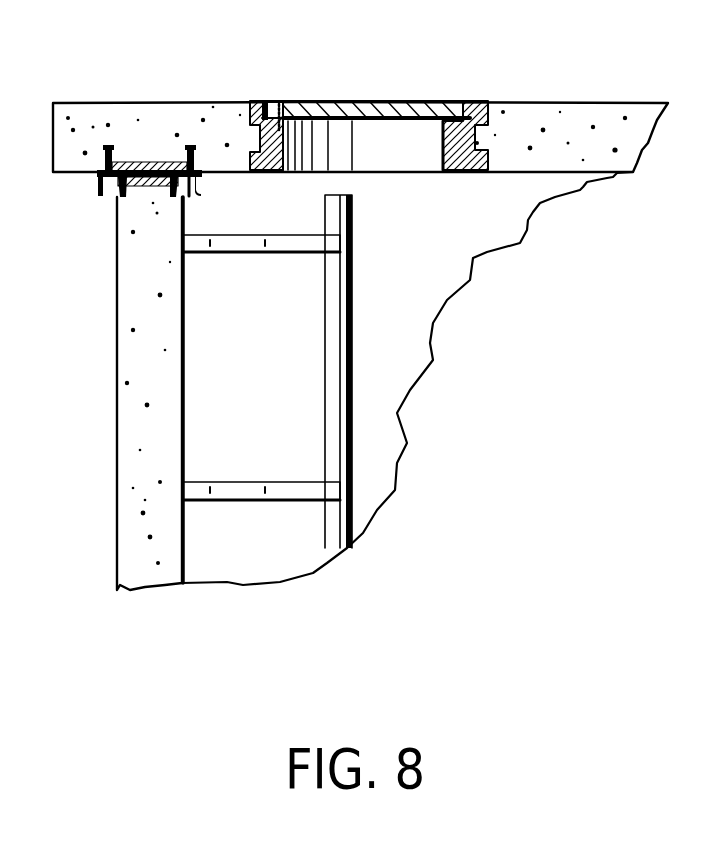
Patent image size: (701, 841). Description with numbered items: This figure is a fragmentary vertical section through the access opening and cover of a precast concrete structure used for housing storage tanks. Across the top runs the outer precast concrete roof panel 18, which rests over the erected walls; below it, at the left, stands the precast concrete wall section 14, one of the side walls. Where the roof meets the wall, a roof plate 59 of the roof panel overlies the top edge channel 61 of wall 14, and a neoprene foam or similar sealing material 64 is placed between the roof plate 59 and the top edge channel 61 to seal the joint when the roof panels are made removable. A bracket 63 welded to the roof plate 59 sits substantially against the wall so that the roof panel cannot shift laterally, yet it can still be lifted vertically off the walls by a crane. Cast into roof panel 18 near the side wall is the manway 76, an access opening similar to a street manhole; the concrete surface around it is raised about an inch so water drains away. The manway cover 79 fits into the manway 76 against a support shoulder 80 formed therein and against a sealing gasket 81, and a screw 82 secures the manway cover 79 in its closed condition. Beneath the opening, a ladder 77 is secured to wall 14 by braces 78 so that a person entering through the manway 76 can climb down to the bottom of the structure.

The precast concrete wall section 14 is at (125, 343).
The precast concrete roof panel 18 is at (118, 103).
The roof plate 59 is at (100, 176).
The top edge channel 61 is at (116, 187).
The bracket 63 is at (192, 183).
The sealing material 64 is at (152, 165).
The manway 76 is at (252, 100).
The ladder 77 is at (325, 345).
The brace 78 is at (248, 490).
The manway cover 79 is at (372, 100).
The support shoulder 80 is at (443, 128).
The sealing gasket 81 is at (456, 132).
The screw 82 is at (281, 101).